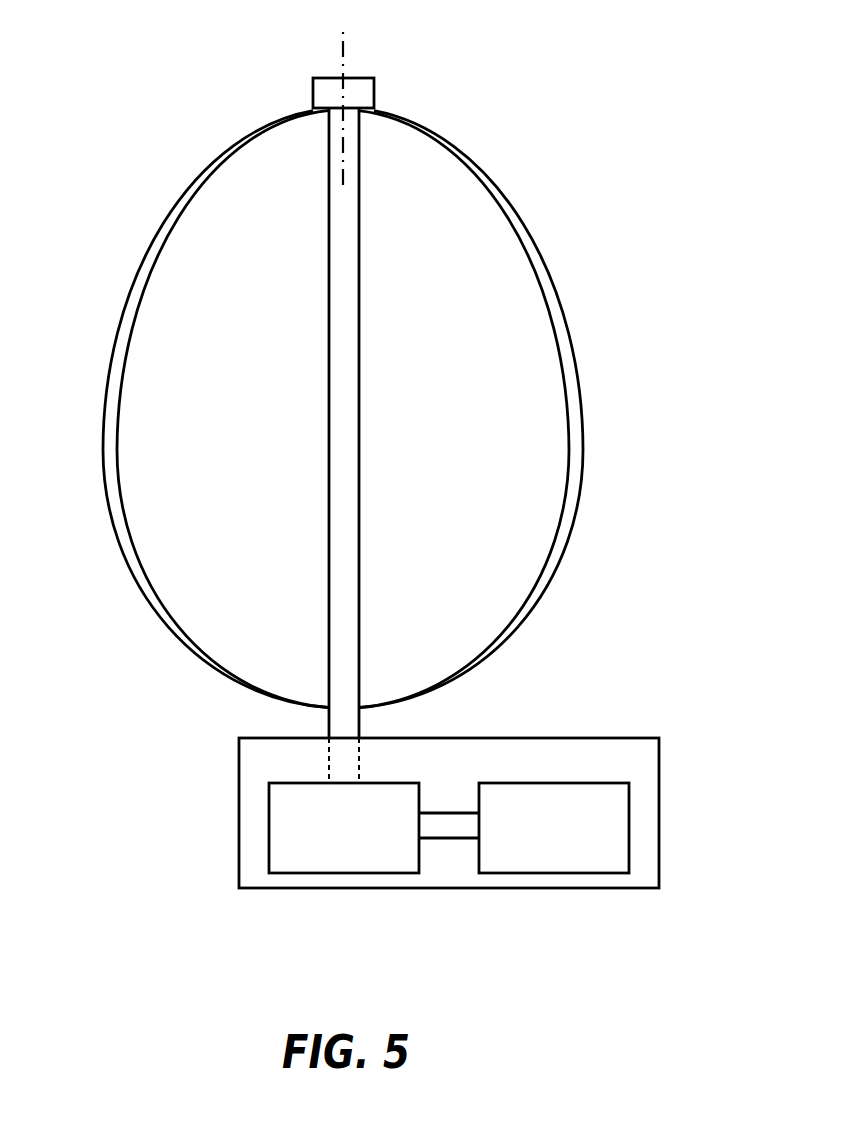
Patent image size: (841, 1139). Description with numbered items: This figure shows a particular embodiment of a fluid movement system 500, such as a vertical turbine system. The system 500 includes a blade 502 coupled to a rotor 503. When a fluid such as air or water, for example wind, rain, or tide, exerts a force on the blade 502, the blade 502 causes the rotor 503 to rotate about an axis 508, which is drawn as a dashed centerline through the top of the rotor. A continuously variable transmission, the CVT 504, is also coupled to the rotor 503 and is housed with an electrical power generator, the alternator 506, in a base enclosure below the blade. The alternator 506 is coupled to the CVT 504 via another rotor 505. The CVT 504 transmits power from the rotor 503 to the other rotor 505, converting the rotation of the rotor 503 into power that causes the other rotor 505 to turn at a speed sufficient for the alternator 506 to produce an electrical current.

The fluid movement system 500 is at (630, 170).
The blade 502 is at (108, 362).
The rotor 503 is at (328, 512).
The continuously variable transmission 504 is at (358, 873).
The other rotor 505 is at (463, 811).
The alternator 506 is at (554, 873).
The axis 508 is at (342, 62).